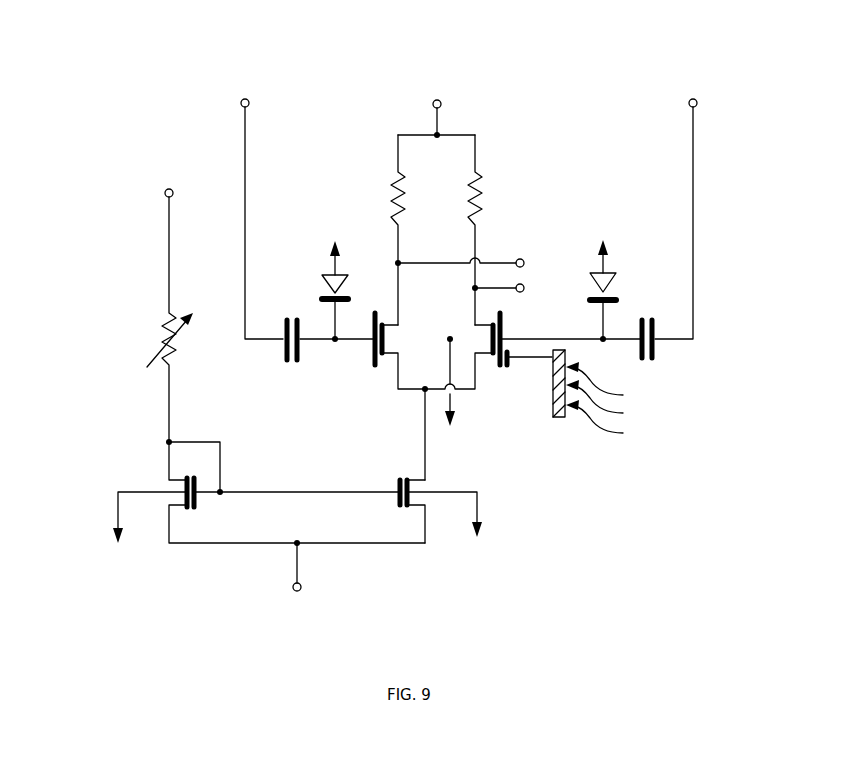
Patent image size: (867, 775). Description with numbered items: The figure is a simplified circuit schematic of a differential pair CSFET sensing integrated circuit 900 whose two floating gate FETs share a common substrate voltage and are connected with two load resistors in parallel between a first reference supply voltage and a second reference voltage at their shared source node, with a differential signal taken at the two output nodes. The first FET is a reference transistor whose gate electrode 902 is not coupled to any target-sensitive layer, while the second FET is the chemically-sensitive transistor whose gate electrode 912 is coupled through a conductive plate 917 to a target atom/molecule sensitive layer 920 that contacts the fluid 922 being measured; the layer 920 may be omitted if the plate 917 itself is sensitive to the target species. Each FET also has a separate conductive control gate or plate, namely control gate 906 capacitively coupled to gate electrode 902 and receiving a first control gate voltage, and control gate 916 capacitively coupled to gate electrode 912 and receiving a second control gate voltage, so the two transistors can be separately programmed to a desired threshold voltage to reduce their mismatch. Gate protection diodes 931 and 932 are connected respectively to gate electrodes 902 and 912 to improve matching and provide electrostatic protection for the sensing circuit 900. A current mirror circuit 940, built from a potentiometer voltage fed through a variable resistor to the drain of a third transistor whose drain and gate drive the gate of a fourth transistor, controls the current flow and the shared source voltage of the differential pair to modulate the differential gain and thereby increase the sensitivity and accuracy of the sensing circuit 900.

The sensing circuit 900 is at (114, 63).
The gate electrode 902 is at (373, 359).
The conductive control gate 906 is at (285, 362).
The gate electrode 912 is at (509, 320).
The conductive control gate 916 is at (655, 357).
The conductive plate 917 is at (510, 364).
The target atom/molecule sensitive layer 920 is at (553, 405).
The fluid 922 is at (638, 397).
The gate protection diode 931 is at (324, 280).
The gate protection diode 932 is at (615, 286).
The current mirror circuit 940 is at (122, 435).